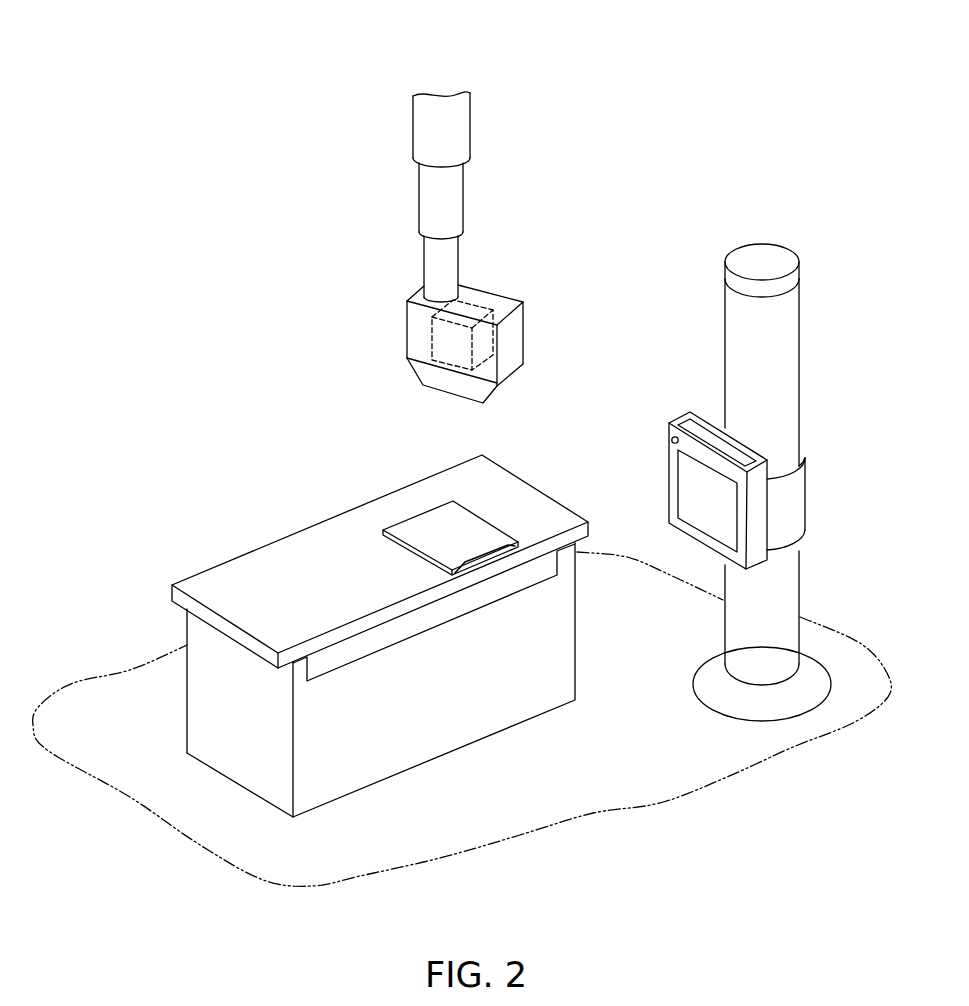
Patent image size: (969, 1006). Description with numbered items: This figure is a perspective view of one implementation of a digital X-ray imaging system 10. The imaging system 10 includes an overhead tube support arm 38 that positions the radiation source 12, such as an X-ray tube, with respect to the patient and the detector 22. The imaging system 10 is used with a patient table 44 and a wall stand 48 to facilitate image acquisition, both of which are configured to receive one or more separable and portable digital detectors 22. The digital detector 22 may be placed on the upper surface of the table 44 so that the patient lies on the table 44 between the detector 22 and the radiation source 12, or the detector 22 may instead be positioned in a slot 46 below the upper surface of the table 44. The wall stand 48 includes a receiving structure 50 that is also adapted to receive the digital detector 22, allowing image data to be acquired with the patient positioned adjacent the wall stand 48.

The imaging system 10 is at (566, 88).
The radiation source 12 is at (477, 293).
The digital detector 22 is at (430, 507).
The overhead tube support arm 38 is at (415, 145).
The patient table 44 is at (472, 735).
The slot 46 is at (538, 582).
The wall stand 48 is at (732, 342).
The receiving structure 50 is at (668, 460).